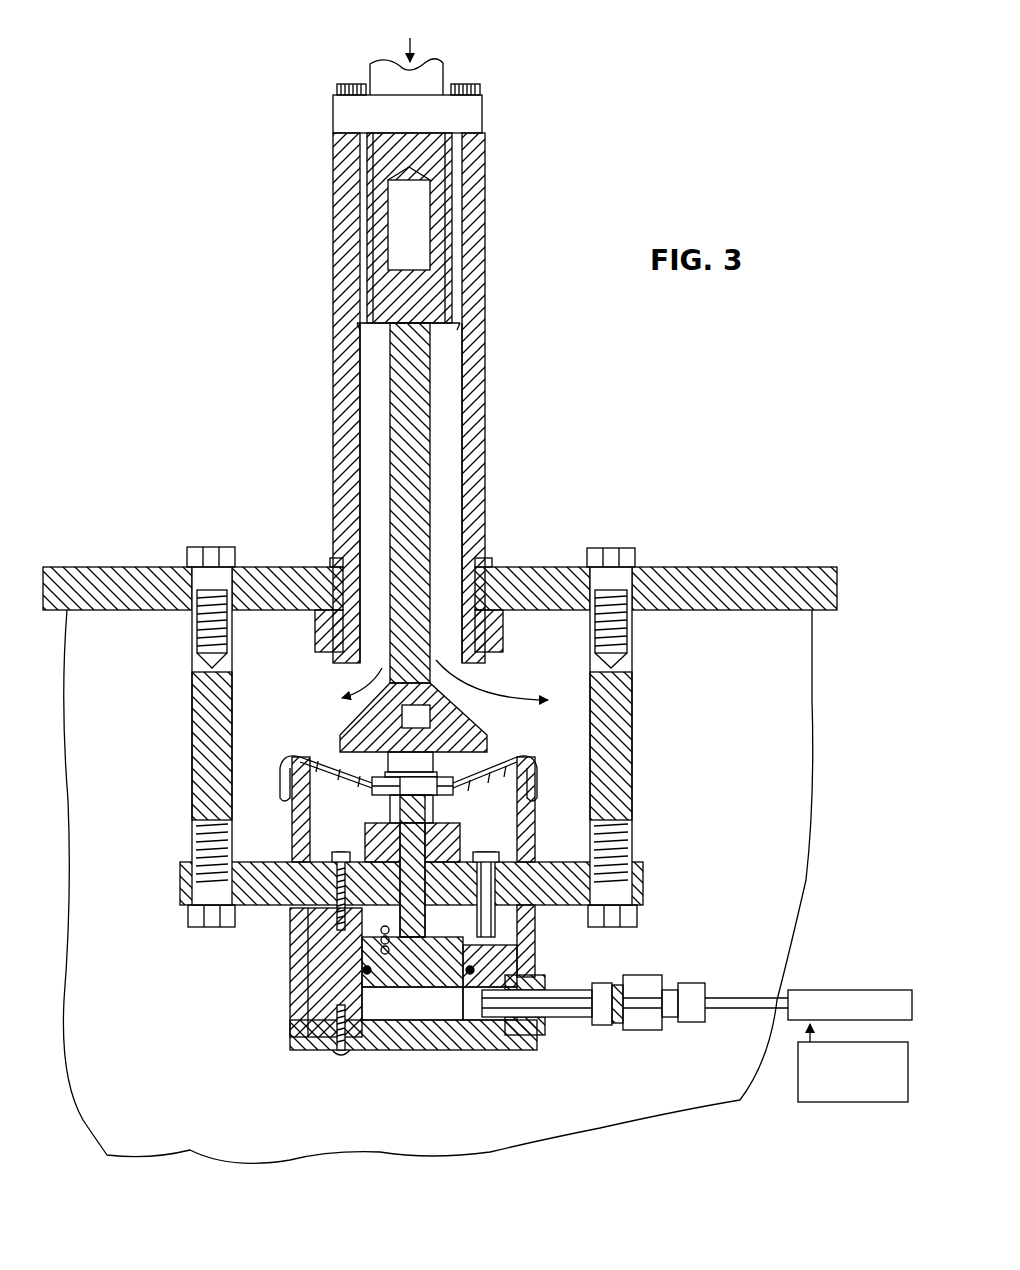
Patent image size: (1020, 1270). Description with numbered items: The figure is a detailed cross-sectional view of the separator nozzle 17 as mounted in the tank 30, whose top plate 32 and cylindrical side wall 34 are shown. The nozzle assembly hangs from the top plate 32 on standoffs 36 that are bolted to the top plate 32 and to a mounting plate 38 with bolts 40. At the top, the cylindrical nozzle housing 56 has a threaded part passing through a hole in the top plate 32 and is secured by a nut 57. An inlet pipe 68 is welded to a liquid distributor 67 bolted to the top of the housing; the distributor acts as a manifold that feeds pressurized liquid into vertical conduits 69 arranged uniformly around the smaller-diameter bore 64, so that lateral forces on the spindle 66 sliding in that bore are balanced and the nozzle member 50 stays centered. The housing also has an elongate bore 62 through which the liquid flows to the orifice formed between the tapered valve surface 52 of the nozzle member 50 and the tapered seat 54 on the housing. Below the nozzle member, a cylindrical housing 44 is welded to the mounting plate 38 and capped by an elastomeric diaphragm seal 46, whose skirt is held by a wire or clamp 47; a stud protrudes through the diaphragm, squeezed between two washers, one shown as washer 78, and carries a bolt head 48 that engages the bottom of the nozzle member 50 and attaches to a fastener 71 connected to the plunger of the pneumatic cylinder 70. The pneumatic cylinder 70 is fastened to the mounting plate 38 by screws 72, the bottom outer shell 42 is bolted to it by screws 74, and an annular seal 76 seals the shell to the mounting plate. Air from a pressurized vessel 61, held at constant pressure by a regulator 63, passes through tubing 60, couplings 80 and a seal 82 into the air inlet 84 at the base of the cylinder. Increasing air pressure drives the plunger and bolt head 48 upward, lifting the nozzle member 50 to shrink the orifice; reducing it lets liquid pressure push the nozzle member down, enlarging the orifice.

The separator nozzle 17 is at (680, 722).
The tank 30 is at (828, 553).
The top plate 32 is at (706, 566).
The cylindrical side wall 34 is at (812, 732).
The standoffs 36 is at (192, 746).
The mounting plate 38 is at (265, 906).
The bolts 40 is at (208, 546).
The bottom outer shell 42 is at (408, 1052).
The cylindrical housing 44 is at (292, 840).
The diaphragm seal 46 is at (494, 770).
The wire or clamp 47 is at (540, 792).
The bolt head 48 is at (432, 762).
The nozzle member 50 is at (384, 717).
The tapered valve surface 52 is at (338, 710).
The tapered seat 54 is at (335, 686).
The cylindrical nozzle housing 56 is at (486, 482).
The nut 57 is at (504, 633).
The tubing 60 is at (737, 995).
The pressurized vessel 61 is at (860, 1102).
The elongate bore 62 is at (457, 405).
The regulator 63 is at (856, 990).
The smaller-diameter bore 64 is at (428, 232).
The spindle 66 is at (432, 447).
The liquid distributor 67 is at (483, 116).
The inlet pipe 68 is at (438, 76).
The vertical conduits 69 is at (447, 228).
The pneumatic cylinder 70 is at (325, 986).
The fastener 71 is at (392, 811).
The screws 72 is at (340, 852).
The screws 74 is at (338, 1053).
The annular seal 76 is at (540, 912).
The washer 78 is at (372, 790).
The couplings 80 is at (662, 972).
The seal 82 is at (548, 1030).
The air inlet 84 is at (472, 1052).